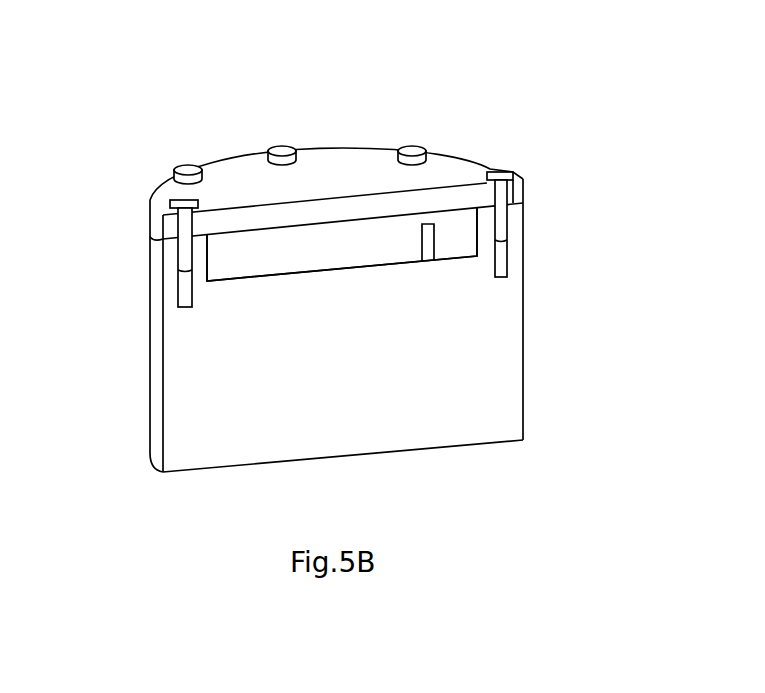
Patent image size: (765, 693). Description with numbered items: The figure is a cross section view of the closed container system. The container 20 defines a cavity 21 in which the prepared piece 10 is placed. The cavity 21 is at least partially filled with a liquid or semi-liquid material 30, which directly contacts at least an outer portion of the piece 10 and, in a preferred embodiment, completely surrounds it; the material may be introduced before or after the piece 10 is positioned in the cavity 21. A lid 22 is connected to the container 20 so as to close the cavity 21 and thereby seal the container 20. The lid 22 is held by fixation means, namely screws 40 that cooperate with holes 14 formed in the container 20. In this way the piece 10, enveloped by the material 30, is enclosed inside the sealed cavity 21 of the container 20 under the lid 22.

The piece 10 is at (427, 259).
The holes 14 is at (188, 285).
The container 20 is at (611, 362).
The cavity 21 is at (353, 252).
The lid 22 is at (328, 162).
The liquid or semi-liquid material 30 is at (309, 264).
The screws 40 is at (272, 147).